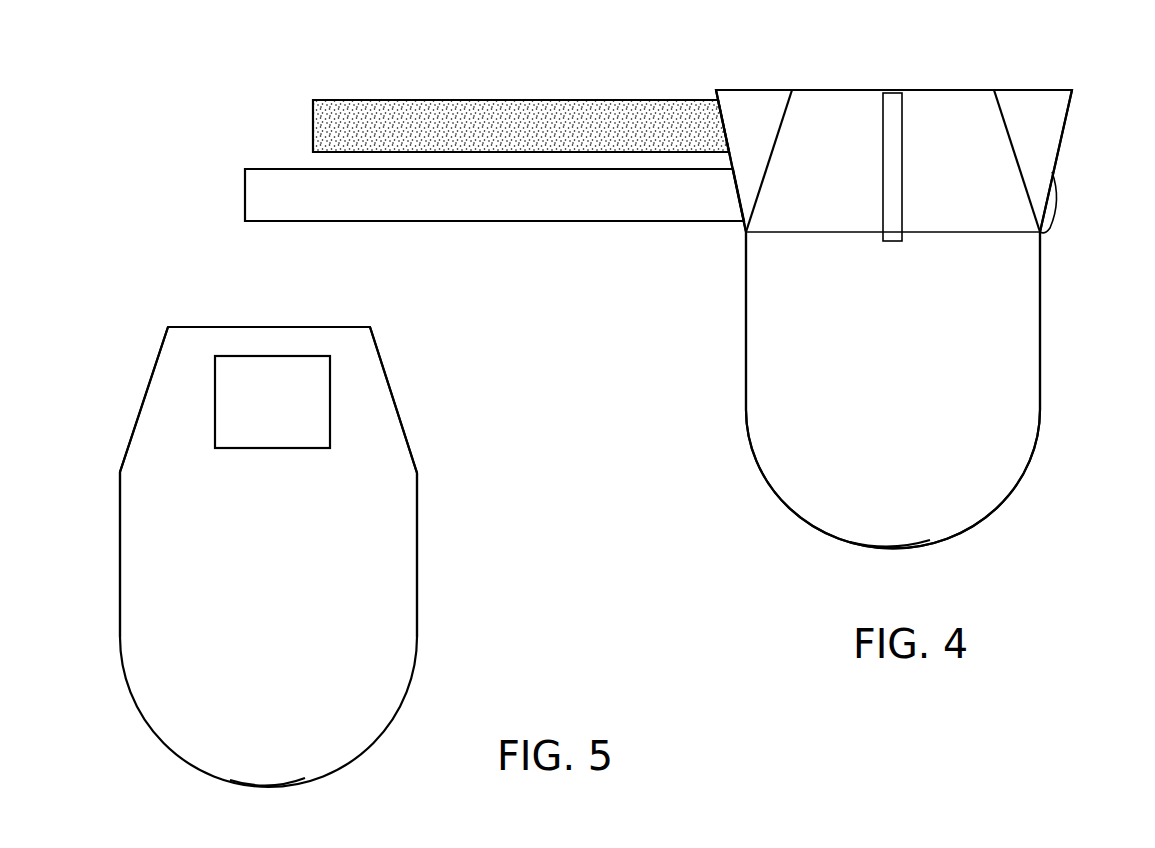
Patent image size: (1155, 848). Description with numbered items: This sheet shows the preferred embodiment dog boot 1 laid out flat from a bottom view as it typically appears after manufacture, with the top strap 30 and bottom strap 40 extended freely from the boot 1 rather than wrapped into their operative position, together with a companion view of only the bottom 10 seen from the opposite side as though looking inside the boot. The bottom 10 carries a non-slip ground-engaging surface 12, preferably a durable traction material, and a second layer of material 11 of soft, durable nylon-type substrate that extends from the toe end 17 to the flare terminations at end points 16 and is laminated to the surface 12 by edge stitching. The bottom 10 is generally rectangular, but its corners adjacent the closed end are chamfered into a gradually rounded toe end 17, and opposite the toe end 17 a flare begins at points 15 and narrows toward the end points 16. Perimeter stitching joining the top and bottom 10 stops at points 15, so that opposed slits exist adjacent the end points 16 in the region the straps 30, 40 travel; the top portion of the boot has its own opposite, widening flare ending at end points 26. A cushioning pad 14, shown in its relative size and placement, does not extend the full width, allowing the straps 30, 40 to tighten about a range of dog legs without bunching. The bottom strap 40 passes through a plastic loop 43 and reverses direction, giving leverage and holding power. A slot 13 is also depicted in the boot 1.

In FIG. 4, the boot 1 is at (645, 290).
In FIG. 4, the bottom 10 is at (744, 364).
In FIG. 4, the second layer of material 11 is at (847, 197).
In FIG. 5, the second layer of material 11 is at (266, 582).
In FIG. 4, the non-slip ground-engaging surface 12 is at (899, 411).
In FIG. 4, the slot 13 is at (893, 100).
In FIG. 5, the cushioning pad 14 is at (276, 407).
In FIG. 5, the points 15 is at (120, 472).
In FIG. 4, the end points 16 is at (792, 90).
In FIG. 5, the end points 16 is at (168, 327).
In FIG. 4, the toe end 17 is at (902, 548).
In FIG. 5, the toe end 17 is at (270, 787).
In FIG. 4, the end points 26 is at (716, 90).
In FIG. 4, the top strap 30 is at (468, 98).
In FIG. 4, the bottom strap 40 is at (456, 225).
In FIG. 4, the plastic loop 43 is at (1058, 179).